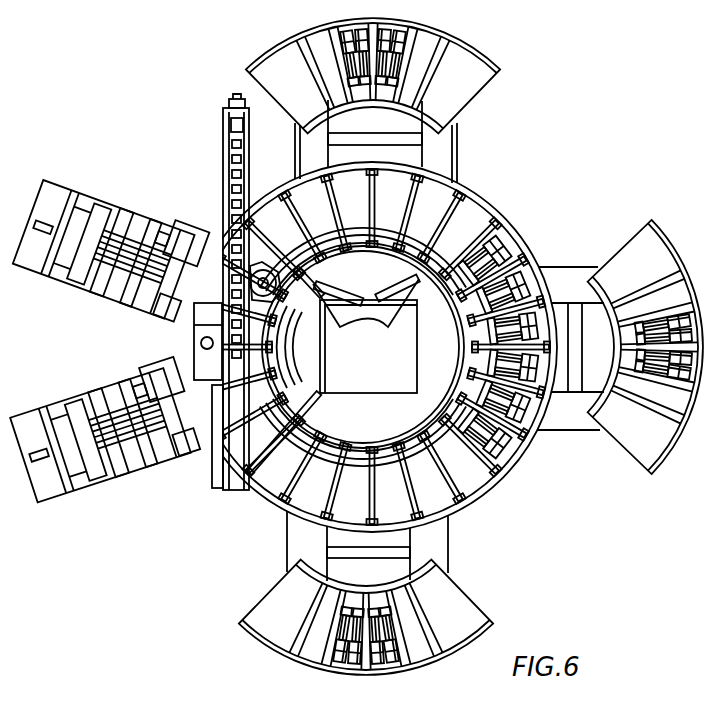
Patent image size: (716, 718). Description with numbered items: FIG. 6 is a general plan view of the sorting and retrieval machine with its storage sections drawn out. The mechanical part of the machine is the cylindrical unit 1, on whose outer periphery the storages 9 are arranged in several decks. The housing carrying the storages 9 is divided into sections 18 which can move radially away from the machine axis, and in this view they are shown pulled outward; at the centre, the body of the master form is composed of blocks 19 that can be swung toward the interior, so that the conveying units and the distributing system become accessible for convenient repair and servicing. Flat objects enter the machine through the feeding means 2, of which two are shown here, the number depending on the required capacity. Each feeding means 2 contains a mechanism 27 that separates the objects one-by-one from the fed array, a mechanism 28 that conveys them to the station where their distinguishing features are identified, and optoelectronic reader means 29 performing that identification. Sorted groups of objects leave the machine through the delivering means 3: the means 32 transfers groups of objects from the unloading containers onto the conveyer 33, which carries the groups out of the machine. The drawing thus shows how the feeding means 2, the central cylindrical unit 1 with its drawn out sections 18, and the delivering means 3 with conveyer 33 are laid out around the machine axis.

The cylindrical unit 1 is at (443, 247).
The means for feeding flat objects into the machine 2 is at (108, 393).
The means for delivering groups of flat objects out of the machine 3 is at (232, 160).
The storages 9 is at (668, 308).
The sections 18 is at (628, 452).
The blocks 19 is at (390, 287).
The mechanism for separating the objects 27 is at (80, 260).
The mechanism for conveying the objects 28 is at (115, 287).
The optoelectronic reader means 29 is at (190, 225).
The means for transferring groups of objects 32 is at (200, 338).
The conveyer 33 is at (232, 104).